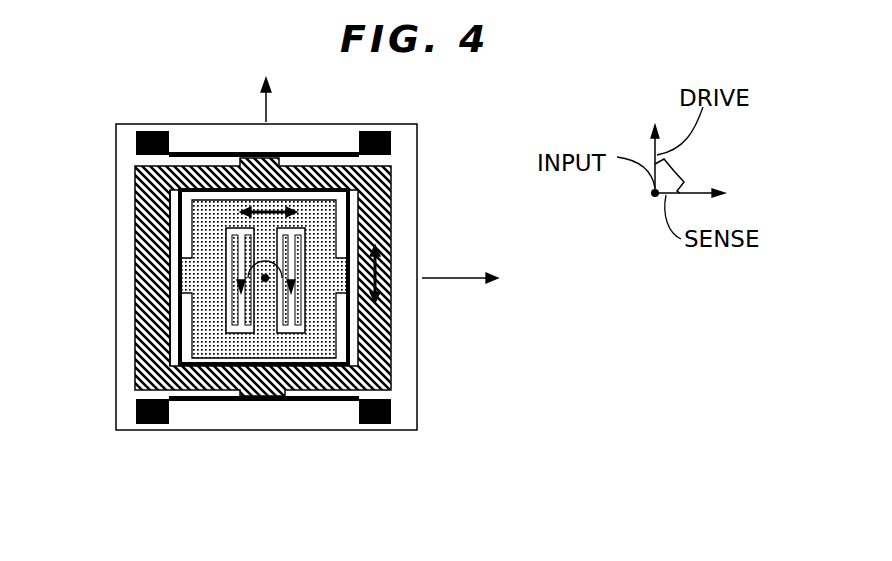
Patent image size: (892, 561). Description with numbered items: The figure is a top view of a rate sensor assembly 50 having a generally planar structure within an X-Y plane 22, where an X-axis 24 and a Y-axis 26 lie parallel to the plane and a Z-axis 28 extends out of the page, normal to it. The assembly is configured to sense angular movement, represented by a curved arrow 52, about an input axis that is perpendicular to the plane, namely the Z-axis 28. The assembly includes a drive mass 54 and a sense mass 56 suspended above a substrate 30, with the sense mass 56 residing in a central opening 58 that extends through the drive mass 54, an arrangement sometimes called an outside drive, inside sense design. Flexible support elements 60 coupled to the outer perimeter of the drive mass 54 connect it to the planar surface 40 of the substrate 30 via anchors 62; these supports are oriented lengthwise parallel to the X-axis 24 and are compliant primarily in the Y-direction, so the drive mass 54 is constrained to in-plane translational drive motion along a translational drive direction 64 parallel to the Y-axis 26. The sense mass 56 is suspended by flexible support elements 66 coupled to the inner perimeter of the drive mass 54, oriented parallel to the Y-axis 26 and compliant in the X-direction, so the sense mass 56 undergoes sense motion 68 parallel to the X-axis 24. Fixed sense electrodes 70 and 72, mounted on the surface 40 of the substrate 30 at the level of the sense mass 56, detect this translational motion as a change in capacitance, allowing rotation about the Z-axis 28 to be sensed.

The X-Y plane 22 is at (677, 172).
The X-axis 24 is at (699, 192).
The Y-axis 26 is at (652, 147).
The Z-axis 28 is at (657, 203).
The substrate 30 is at (116, 124).
The planar surface 40 is at (278, 430).
The rate sensor assembly 50 is at (518, 440).
The curved arrow 52 is at (270, 261).
The drive mass 54 is at (143, 360).
The sense mass 56 is at (224, 200).
The central opening 58 is at (172, 210).
The flexible support elements 60 is at (236, 163).
The anchors 62 is at (150, 131).
The translational drive direction 64 is at (392, 284).
The flexible support elements 66 is at (180, 315).
The sense motion 68 is at (278, 200).
The sense electrode 70 is at (241, 293).
The sense electrode 72 is at (227, 314).